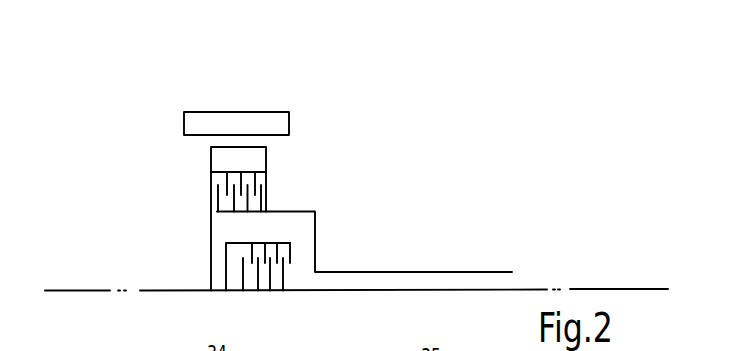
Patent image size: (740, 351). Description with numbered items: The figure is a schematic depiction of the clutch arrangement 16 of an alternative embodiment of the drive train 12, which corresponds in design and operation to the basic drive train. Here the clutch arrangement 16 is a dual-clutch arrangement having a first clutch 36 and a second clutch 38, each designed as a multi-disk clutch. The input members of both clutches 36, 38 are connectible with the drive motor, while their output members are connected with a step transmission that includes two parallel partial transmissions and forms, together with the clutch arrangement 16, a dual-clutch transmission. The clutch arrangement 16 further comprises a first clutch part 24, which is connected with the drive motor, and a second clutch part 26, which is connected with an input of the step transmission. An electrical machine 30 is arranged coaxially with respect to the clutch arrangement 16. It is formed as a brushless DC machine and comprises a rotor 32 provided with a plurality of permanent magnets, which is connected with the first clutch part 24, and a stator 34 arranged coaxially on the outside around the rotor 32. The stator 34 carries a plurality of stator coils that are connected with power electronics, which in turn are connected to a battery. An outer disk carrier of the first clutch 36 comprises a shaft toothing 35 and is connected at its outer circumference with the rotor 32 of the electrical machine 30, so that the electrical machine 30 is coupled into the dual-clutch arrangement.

The drive train 12 is at (483, 130).
The clutch arrangement 16 is at (377, 123).
The first clutch part 24 is at (212, 228).
The second clutch part 26 is at (300, 211).
The electrical machine 30 is at (303, 125).
The rotor 32 is at (249, 161).
The stator 34 is at (251, 122).
The shaft toothing 35 is at (266, 172).
The first clutch 36 is at (195, 178).
The second clutch 38 is at (200, 260).